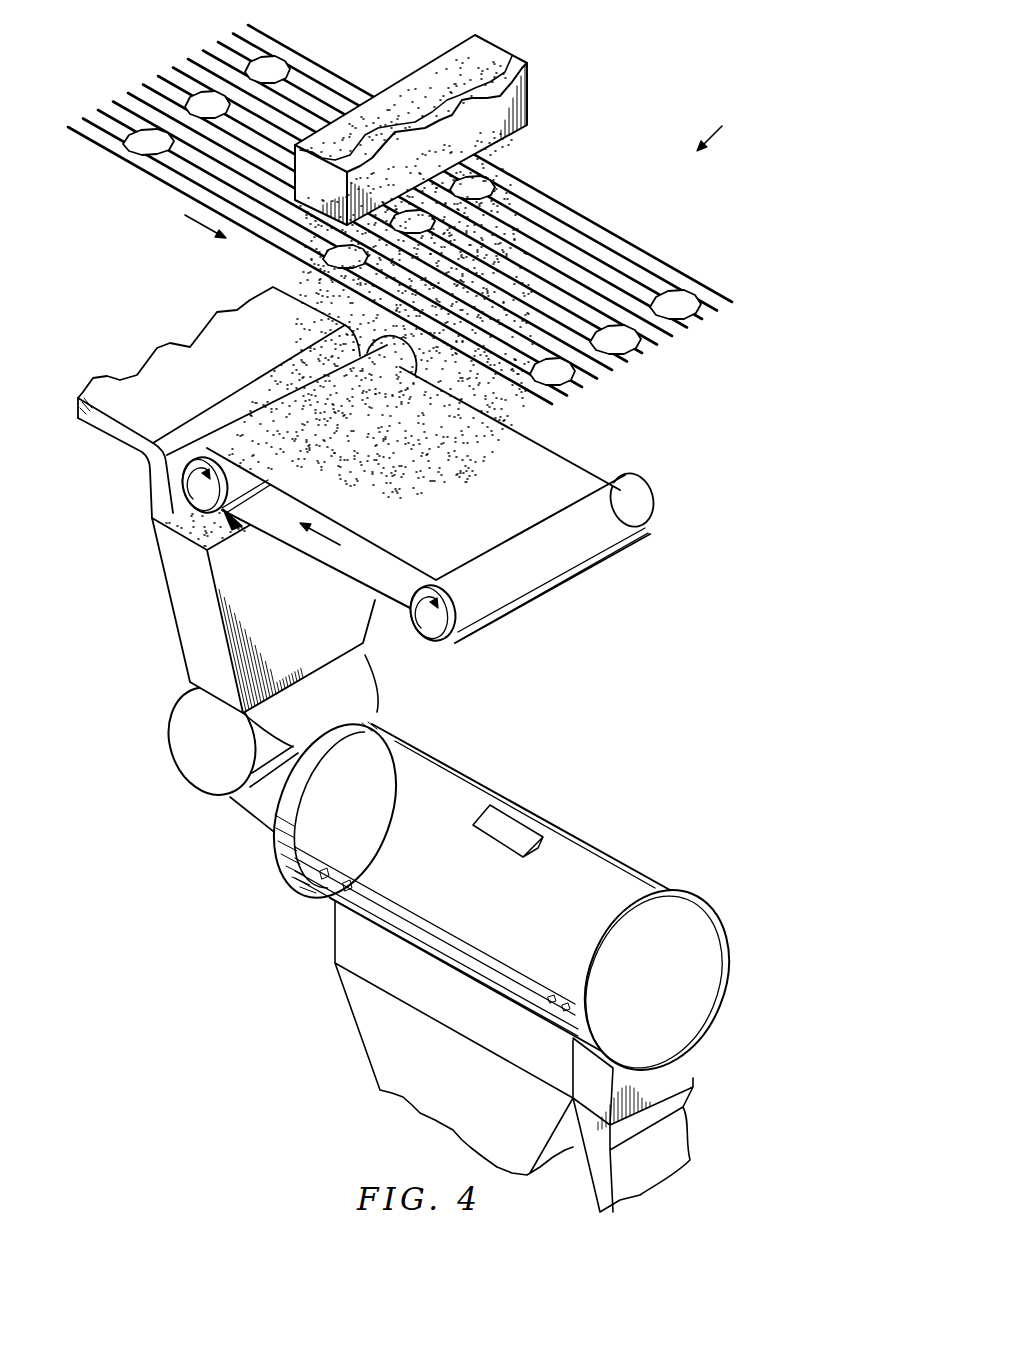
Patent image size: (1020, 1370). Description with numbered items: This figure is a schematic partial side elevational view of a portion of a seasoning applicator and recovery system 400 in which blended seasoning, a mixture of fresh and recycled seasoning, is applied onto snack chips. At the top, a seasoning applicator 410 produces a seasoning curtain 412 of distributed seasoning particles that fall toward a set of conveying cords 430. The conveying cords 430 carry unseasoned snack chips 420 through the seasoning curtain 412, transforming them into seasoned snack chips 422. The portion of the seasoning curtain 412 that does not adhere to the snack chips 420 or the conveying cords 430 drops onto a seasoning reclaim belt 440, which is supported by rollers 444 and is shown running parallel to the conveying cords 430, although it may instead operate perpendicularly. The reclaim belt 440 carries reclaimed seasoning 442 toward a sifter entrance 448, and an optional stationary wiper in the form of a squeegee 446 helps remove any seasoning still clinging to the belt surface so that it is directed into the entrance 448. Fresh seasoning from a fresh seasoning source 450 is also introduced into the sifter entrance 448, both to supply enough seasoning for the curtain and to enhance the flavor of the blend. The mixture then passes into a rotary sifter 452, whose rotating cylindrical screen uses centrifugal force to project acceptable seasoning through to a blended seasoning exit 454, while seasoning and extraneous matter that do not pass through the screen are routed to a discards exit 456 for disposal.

The seasoning applicator and recovery system 400 is at (732, 127).
The seasoning applicator 410 is at (527, 92).
The seasoning curtain 412 is at (513, 152).
The unseasoned snack chips 420 is at (138, 148).
The seasoned snack chips 422 is at (567, 383).
The conveying cords 430 is at (603, 228).
The seasoning reclaim belt 440 is at (580, 560).
The reclaimed seasoning 442 is at (240, 418).
The rollers 444 is at (437, 643).
The squeegee 446 is at (228, 522).
The sifter entrance 448 is at (167, 580).
The fresh seasoning source 450 is at (130, 377).
The rotary sifter 452 is at (603, 875).
The blended seasoning exit 454 is at (363, 1035).
The discards exit 456 is at (687, 1145).